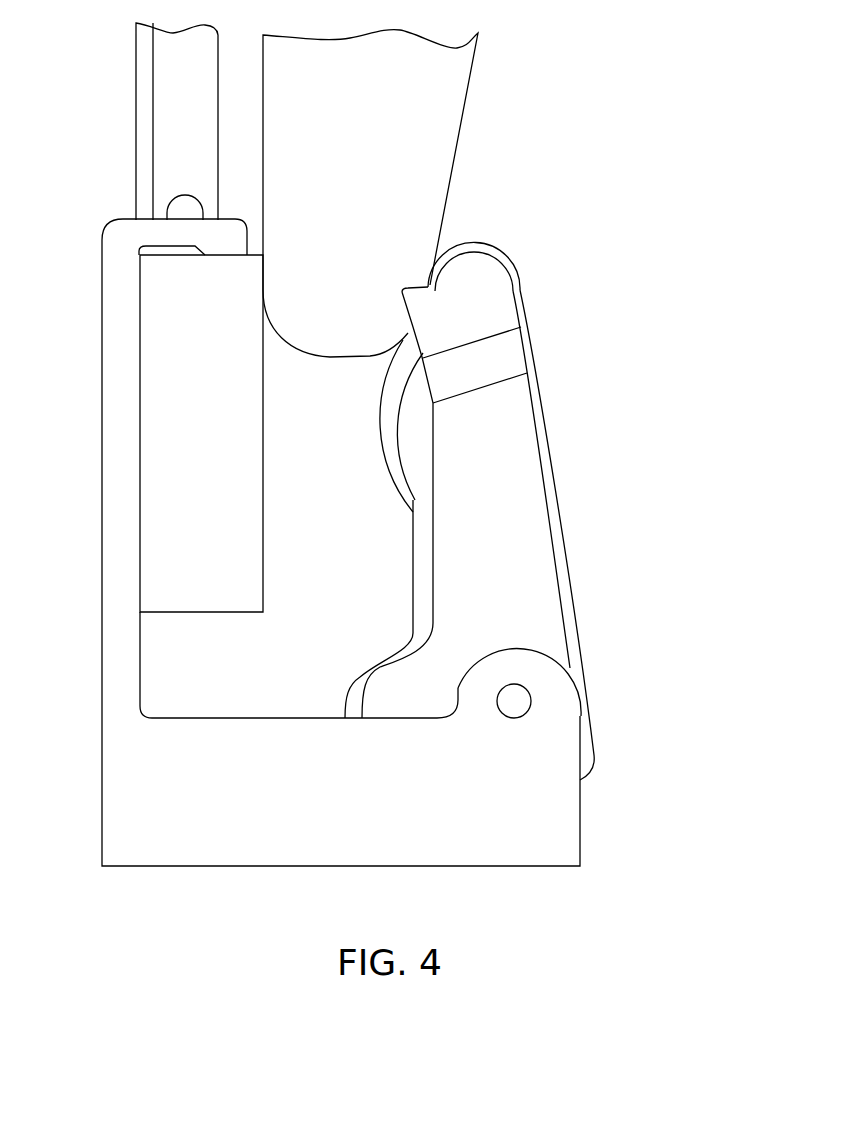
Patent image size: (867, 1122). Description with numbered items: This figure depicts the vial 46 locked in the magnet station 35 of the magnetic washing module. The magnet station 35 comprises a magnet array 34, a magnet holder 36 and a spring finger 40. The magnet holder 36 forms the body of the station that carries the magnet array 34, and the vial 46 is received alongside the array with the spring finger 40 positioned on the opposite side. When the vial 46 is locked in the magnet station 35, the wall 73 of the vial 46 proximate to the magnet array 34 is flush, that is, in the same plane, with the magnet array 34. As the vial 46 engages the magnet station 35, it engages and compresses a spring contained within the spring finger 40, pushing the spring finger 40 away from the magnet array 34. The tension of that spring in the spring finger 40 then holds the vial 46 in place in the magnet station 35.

The magnet array 34 is at (178, 527).
The magnet station 35 is at (77, 417).
The magnet holder 36 is at (178, 827).
The spring finger 40 is at (528, 575).
The vial 46 is at (423, 90).
The wall 73 is at (258, 256).